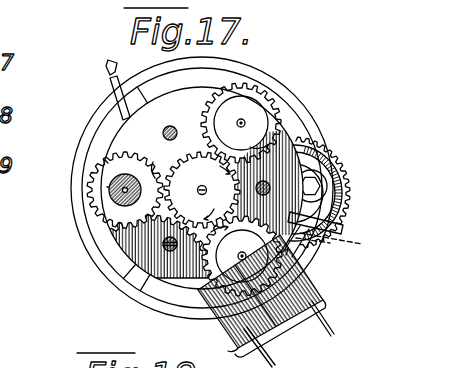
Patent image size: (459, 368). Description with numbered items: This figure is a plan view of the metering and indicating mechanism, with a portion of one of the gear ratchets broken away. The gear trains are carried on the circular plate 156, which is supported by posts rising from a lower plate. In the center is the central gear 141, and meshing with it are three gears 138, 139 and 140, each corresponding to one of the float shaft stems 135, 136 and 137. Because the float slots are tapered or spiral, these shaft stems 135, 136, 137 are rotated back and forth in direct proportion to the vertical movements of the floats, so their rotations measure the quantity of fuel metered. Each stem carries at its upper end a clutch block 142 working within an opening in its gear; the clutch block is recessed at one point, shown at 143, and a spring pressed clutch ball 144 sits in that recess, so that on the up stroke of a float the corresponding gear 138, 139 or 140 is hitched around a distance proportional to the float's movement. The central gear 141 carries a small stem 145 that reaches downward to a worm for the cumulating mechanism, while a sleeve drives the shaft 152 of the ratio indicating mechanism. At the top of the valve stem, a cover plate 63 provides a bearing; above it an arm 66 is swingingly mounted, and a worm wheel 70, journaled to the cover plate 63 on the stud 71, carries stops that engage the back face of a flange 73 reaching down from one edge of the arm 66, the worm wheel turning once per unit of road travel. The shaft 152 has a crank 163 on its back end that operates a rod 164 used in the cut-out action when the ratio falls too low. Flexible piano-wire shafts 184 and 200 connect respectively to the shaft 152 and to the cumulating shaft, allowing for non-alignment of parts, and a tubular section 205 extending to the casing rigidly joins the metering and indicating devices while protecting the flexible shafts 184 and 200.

The cover plate 63 is at (182, 77).
The arm 66 is at (345, 228).
The worm wheel 70 is at (330, 197).
The stud 71 is at (317, 180).
The flange 73 is at (341, 244).
The shaft stem 135 is at (104, 202).
The shaft stem 136 is at (241, 123).
The shaft stem 137 is at (243, 257).
The gear 138 is at (147, 198).
The gear 139 is at (248, 80).
The gear 140 is at (215, 315).
The central gear 141 is at (202, 190).
The clutch block 142 is at (108, 163).
The recess 143 is at (110, 222).
The spring pressed clutch ball 144 is at (108, 187).
The small stem 145 is at (201, 204).
The shaft 152 is at (120, 112).
The circular plate 156 is at (118, 292).
The crank 163 is at (110, 78).
The rod 164 is at (108, 68).
The flexible shaft 184 is at (273, 359).
The flexible shaft 200 is at (332, 325).
The tubular section 205 is at (318, 291).